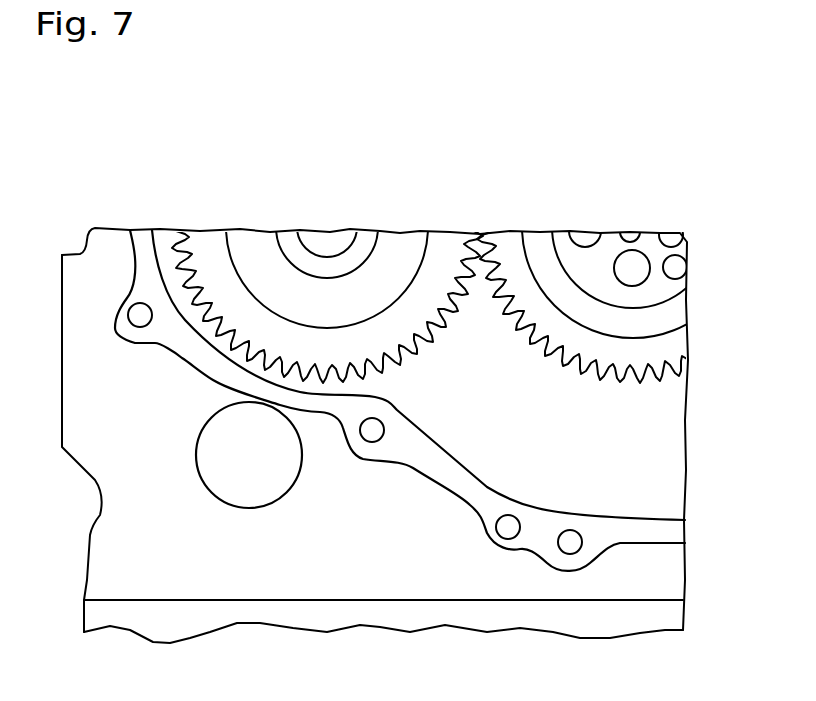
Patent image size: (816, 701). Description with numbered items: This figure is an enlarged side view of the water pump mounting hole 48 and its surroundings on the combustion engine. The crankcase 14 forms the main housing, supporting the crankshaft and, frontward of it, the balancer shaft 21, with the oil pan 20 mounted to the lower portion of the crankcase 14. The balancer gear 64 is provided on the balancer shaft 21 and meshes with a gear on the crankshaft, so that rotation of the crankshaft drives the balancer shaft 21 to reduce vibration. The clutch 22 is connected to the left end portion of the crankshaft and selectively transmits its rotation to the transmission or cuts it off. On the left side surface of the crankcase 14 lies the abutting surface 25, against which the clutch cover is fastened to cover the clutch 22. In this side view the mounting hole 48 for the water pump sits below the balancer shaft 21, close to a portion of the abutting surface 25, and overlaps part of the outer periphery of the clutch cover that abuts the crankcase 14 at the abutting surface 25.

The crankcase 14 is at (658, 574).
The oil pan 20 is at (652, 618).
The balancer shaft 21 is at (326, 240).
The clutch 22 is at (665, 290).
The abutting surface 25 is at (453, 477).
The mounting hole 48 is at (253, 507).
The balancer gear 64 is at (445, 257).